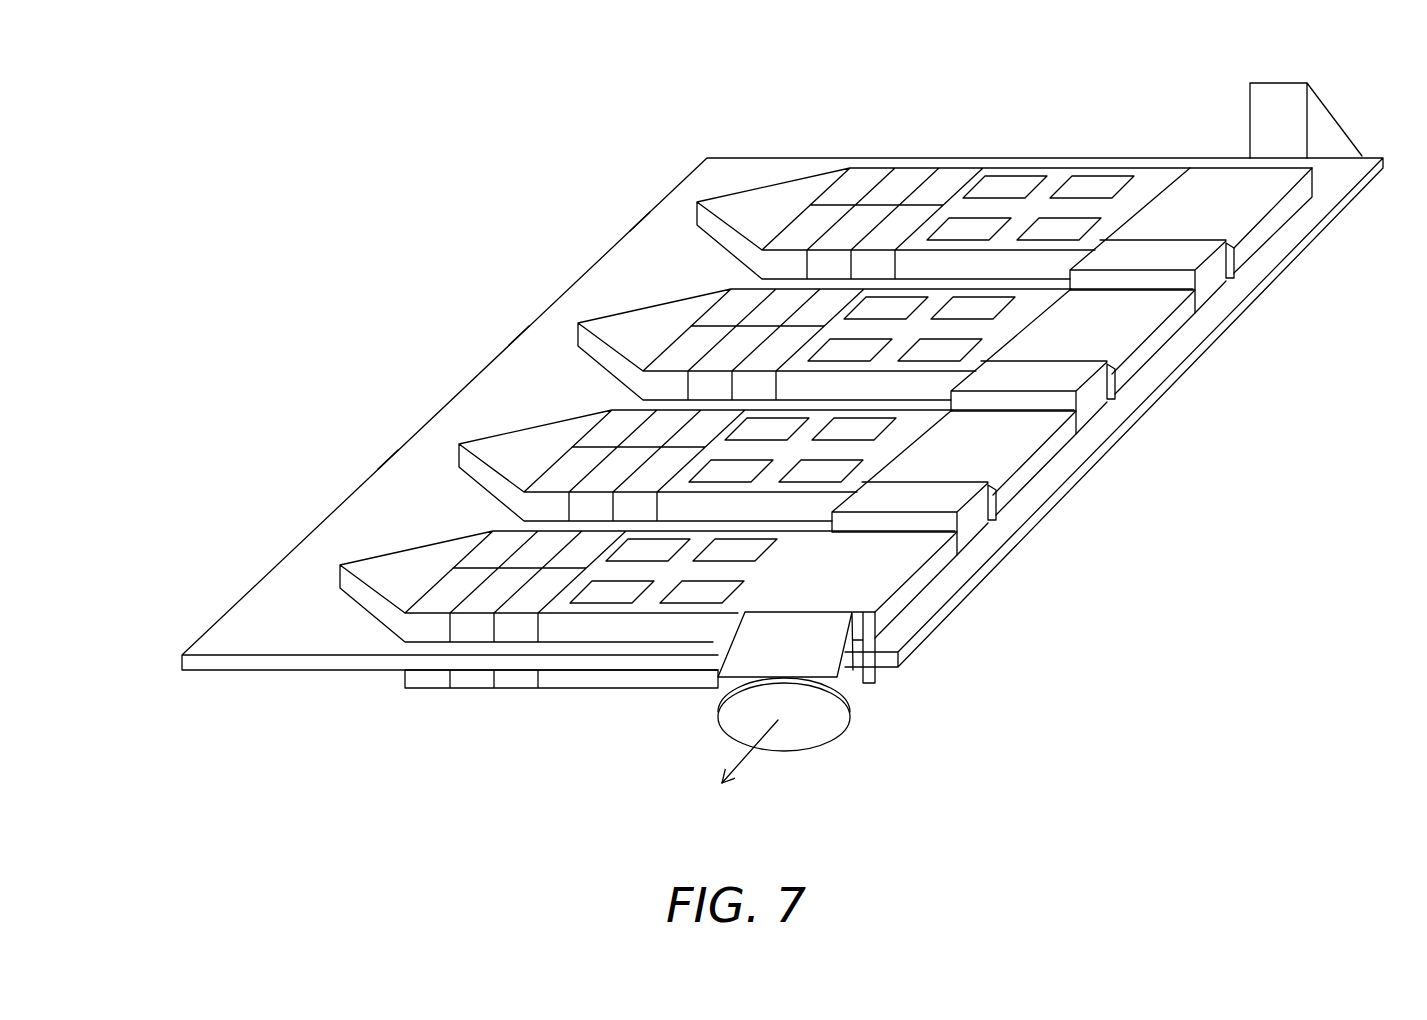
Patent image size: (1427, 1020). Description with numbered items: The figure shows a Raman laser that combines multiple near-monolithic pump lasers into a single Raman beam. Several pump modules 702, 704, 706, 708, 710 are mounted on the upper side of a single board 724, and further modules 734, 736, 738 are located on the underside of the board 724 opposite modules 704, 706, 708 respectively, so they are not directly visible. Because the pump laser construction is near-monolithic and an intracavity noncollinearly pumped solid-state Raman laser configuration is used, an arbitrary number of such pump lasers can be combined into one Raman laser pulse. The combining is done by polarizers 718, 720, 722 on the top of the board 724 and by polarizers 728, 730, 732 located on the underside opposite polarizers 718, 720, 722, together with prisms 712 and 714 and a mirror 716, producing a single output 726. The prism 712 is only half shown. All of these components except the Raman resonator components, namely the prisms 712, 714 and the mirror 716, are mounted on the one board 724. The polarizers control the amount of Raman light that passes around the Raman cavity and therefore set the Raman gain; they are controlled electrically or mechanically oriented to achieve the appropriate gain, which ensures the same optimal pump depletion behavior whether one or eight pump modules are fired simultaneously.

The module 702 is at (363, 564).
The module 704 is at (498, 444).
The module 706 is at (620, 320).
The module 708 is at (737, 203).
The module 710 is at (407, 672).
The prism 712 is at (1330, 138).
The prism 714 is at (815, 657).
The mirror 716 is at (852, 722).
The polarizer 718 is at (972, 520).
The polarizer 720 is at (1090, 398).
The polarizer 722 is at (1207, 285).
The board 724 is at (257, 630).
The output 726 is at (758, 770).
The polarizer 728 is at (996, 578).
The polarizer 730 is at (1122, 452).
The polarizer 732 is at (1235, 338).
The module 734 is at (376, 460).
The module 736 is at (504, 336).
The module 738 is at (627, 222).